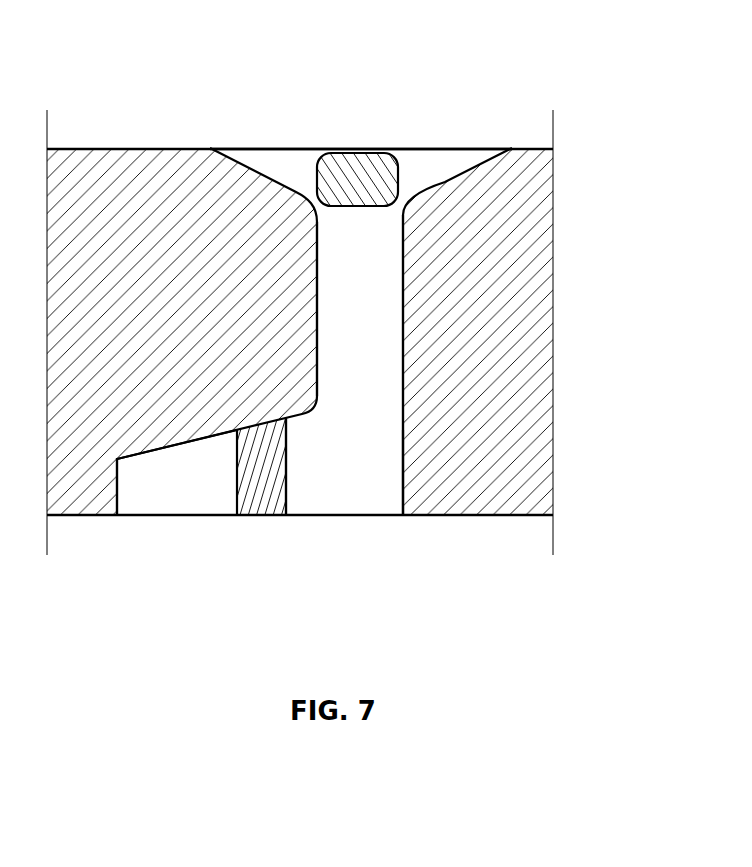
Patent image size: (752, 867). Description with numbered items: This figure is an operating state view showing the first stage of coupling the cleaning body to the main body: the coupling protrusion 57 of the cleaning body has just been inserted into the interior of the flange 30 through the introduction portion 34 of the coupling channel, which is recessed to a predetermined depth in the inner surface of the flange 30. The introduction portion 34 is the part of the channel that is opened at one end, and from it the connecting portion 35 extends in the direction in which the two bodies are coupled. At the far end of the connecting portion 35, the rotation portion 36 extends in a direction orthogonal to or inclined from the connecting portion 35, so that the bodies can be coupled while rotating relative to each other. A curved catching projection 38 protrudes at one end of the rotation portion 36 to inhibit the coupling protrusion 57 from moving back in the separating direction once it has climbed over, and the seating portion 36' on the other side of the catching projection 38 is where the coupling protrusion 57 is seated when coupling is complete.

The flange 30 is at (541, 280).
The introduction portion 34 is at (431, 167).
The connecting portion 35 is at (382, 337).
The rotation portion 36 is at (344, 529).
The seating portion 36' is at (177, 535).
The catching projection 38 is at (262, 492).
The coupling protrusion 57 is at (317, 171).